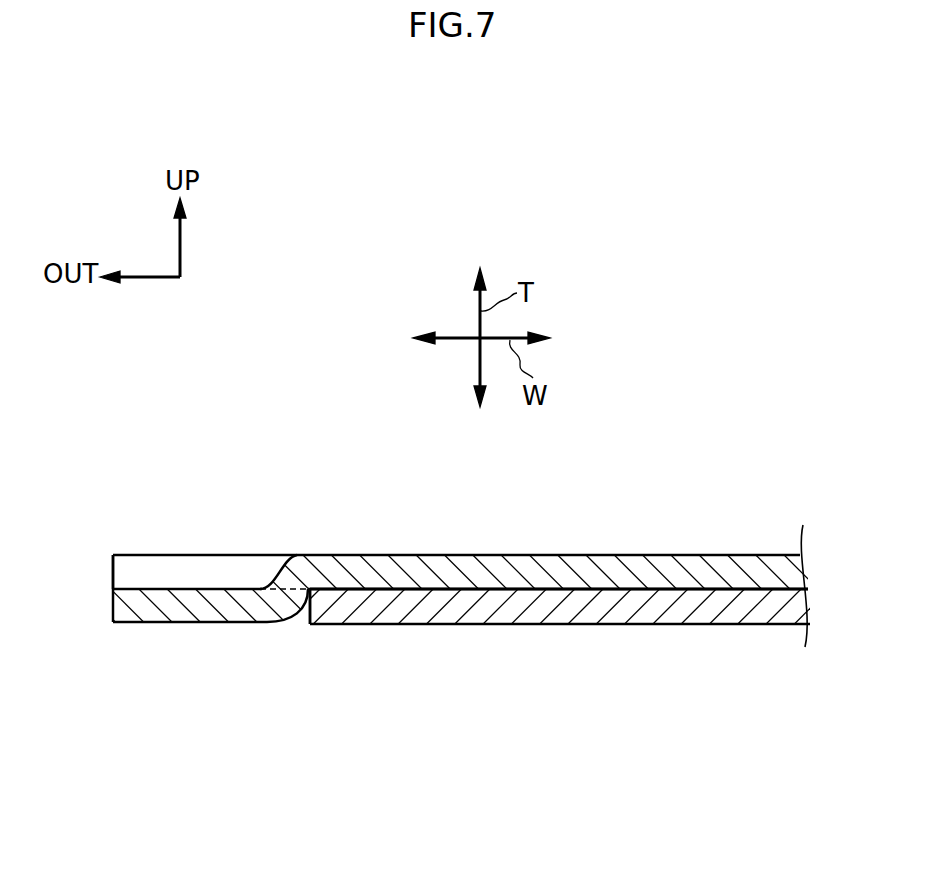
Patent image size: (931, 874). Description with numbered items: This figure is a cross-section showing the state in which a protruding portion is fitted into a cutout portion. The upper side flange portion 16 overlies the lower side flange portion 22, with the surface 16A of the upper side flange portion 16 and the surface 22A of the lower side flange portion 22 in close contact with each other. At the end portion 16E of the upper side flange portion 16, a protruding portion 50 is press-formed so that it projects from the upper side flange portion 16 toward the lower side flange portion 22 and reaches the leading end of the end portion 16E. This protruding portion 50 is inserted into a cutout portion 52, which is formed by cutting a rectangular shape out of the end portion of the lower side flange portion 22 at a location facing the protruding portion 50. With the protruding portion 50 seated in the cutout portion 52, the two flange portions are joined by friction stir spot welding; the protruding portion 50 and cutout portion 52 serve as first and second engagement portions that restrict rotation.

The upper side flange portion 16 is at (628, 553).
The end portion of the upper side flange portion 16E is at (140, 555).
The surface of the upper side flange portion 16A is at (556, 590).
The protruding portion 50 is at (214, 587).
The cutout portion 52 is at (304, 617).
The lower side flange portion 22 is at (660, 623).
The surface of the lower side flange portion 22A is at (485, 589).